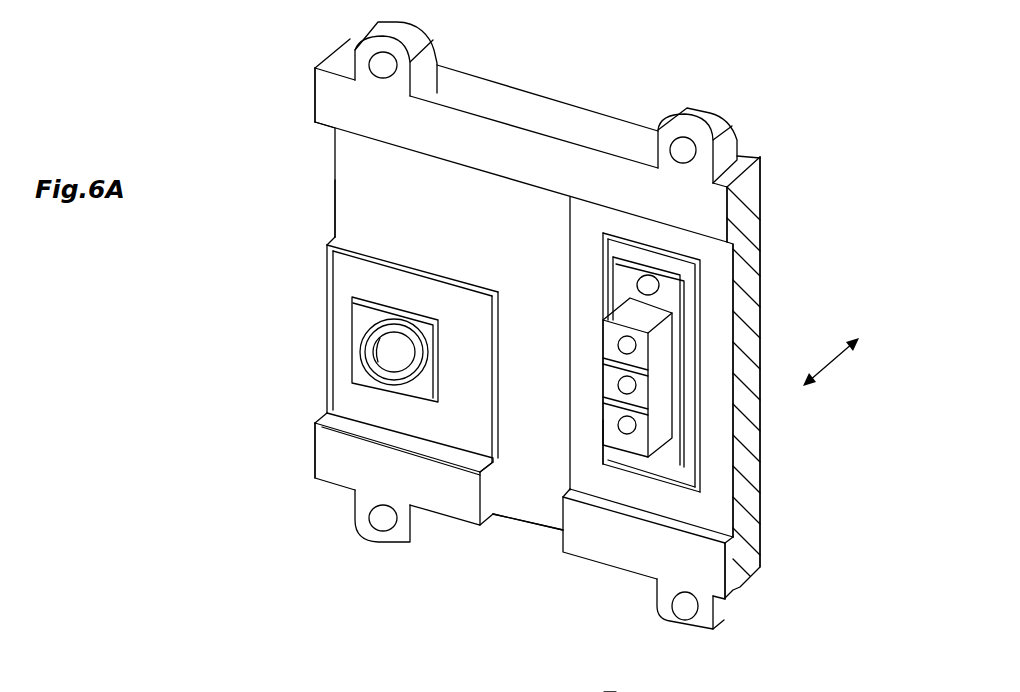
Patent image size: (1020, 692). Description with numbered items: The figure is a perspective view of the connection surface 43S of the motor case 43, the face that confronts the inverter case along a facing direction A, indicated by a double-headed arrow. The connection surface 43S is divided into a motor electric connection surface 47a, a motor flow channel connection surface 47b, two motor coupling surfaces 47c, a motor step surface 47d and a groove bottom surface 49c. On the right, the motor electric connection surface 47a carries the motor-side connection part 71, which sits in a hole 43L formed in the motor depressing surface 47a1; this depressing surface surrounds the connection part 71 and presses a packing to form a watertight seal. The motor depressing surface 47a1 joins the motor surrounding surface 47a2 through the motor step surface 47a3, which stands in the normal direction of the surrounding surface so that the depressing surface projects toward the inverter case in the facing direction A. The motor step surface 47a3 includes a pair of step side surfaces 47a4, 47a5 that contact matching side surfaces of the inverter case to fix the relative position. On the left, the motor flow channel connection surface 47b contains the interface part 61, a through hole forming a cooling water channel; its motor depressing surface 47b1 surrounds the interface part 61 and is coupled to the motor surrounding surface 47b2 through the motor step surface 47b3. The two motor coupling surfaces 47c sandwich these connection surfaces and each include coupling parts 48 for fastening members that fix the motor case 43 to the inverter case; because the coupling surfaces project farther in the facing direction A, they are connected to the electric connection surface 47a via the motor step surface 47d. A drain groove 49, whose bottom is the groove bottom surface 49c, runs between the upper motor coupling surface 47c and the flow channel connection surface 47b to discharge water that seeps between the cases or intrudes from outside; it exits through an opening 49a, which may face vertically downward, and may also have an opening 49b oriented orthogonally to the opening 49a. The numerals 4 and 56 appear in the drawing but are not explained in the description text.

The camera unit 4 is at (520, 316).
The motor case 43 is at (520, 316).
The connection surface of the motor case 43S is at (312, 198).
The hole 43L is at (700, 450).
The motor electric connection surface 47a is at (652, 537).
The motor depressing surface 47a1 is at (668, 507).
The motor surrounding surface 47a2 is at (710, 376).
The motor step surface 47a3 is at (652, 536).
The step side surface 47a4 is at (735, 538).
The step side surface 47a5 is at (603, 453).
The motor flow channel connection surface 47b is at (363, 417).
The motor depressing surface 47b1 is at (363, 312).
The motor surrounding surface 47b2 is at (340, 270).
The motor step surface 47b3 is at (440, 410).
The motor coupling surface 47c is at (340, 93).
The motor step surface 47d is at (312, 437).
The coupling part 48 is at (405, 29).
The drain groove 49 is at (497, 482).
The opening 49a is at (487, 530).
The opening 49b is at (337, 240).
The groove bottom surface 49c is at (537, 367).
The connector 56 is at (604, 691).
The interface part 61 is at (379, 362).
The motor-side connection part 71 is at (664, 374).
The facing direction A is at (837, 363).